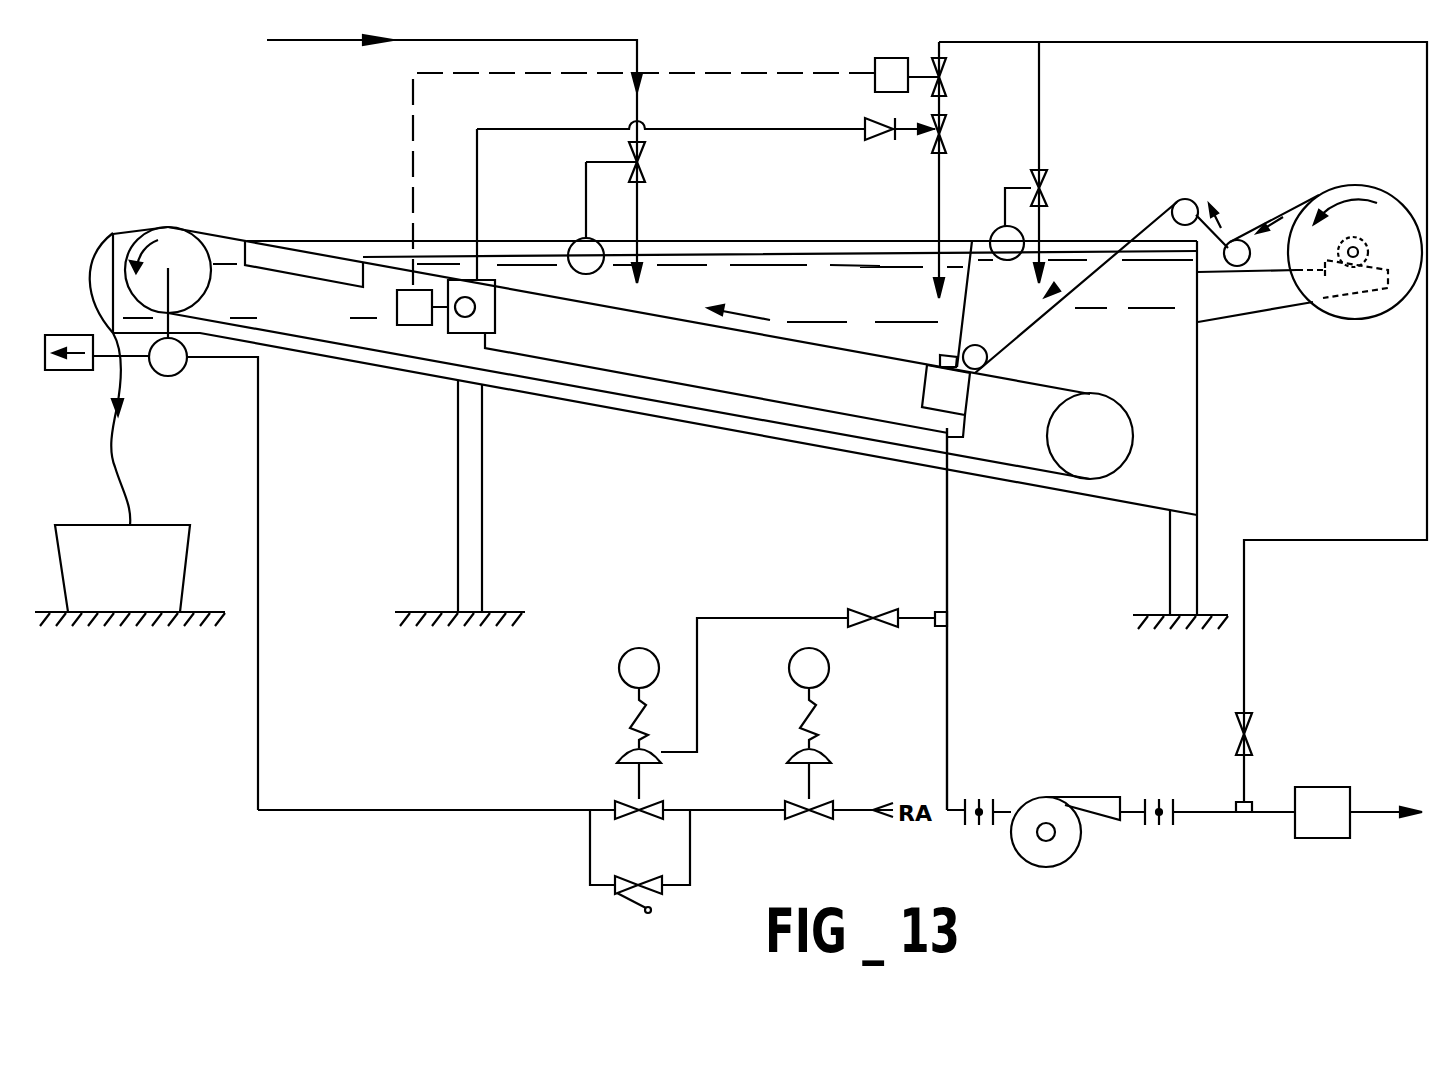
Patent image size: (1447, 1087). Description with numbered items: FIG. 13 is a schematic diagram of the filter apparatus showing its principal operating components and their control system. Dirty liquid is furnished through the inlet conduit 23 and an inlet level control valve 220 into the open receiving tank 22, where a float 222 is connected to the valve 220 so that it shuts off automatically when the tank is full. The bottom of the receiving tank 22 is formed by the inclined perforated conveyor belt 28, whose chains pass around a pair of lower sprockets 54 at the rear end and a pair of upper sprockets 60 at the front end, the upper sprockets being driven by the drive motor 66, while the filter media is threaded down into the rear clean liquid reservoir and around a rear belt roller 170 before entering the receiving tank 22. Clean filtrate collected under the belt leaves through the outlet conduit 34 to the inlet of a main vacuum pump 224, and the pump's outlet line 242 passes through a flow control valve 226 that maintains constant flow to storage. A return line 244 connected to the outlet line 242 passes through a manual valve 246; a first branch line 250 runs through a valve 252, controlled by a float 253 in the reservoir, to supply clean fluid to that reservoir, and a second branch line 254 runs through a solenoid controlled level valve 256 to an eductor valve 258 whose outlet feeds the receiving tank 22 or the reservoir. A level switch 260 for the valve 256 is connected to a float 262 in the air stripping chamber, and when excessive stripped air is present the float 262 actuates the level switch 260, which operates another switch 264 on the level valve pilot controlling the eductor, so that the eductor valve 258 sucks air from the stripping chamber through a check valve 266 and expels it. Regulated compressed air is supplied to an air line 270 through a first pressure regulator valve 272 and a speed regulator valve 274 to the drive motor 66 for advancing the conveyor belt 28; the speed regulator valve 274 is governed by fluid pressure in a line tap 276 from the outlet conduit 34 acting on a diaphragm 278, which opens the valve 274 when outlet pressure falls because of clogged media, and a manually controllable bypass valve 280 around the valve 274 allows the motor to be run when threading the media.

The receiving tank 22 is at (840, 314).
The inlet conduit 23 is at (527, 41).
The perforated conveyor belt 28 is at (1033, 380).
The outlet conduit 34 is at (945, 528).
The lower sprockets 54 is at (1047, 432).
The upper sprockets 60 is at (210, 293).
The drive motor 66 is at (181, 371).
The rear belt roller 170 is at (982, 308).
The inlet level control valve 220 is at (642, 158).
The float 222 is at (575, 272).
The main vacuum pump 224 is at (1063, 862).
The flow control valve 226 is at (1310, 840).
The outlet line 242 is at (1195, 813).
The return line 244 is at (1190, 45).
The manual valve 246 is at (1247, 743).
The first branch line 250 is at (1040, 88).
The valve 252 is at (1046, 183).
The float 253 is at (993, 228).
The second branch line 254 is at (935, 198).
The solenoid controlled level valve 256 is at (946, 72).
The eductor valve 258 is at (946, 128).
The level switch 260 is at (392, 297).
The float 262 is at (465, 318).
The switch 264 is at (875, 70).
The check valve 266 is at (887, 137).
The air line 270 is at (857, 813).
The first pressure regulator valve 272 is at (808, 793).
The speed regulator valve 274 is at (640, 792).
The line tap 276 is at (760, 617).
The diaphragm 278 is at (617, 752).
The bypass valve 280 is at (651, 892).